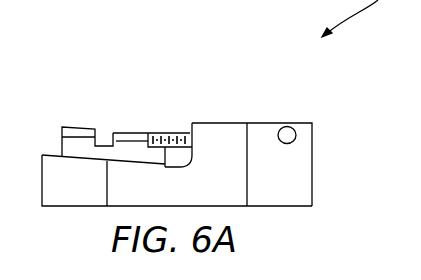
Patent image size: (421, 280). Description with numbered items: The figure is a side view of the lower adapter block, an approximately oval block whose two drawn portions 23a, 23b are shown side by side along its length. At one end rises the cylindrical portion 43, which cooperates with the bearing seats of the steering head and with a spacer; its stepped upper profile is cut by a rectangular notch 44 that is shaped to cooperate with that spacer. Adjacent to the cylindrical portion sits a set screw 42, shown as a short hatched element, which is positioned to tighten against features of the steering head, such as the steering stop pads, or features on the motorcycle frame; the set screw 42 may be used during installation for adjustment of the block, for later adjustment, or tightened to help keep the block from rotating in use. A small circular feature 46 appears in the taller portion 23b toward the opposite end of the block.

The first body portion 23a is at (47, 185).
The second body portion 23b is at (297, 178).
The set screw 42 is at (175, 130).
The cylindrical portion 43 is at (80, 142).
The rectangular notch 44 is at (102, 138).
The hole 46 is at (290, 126).